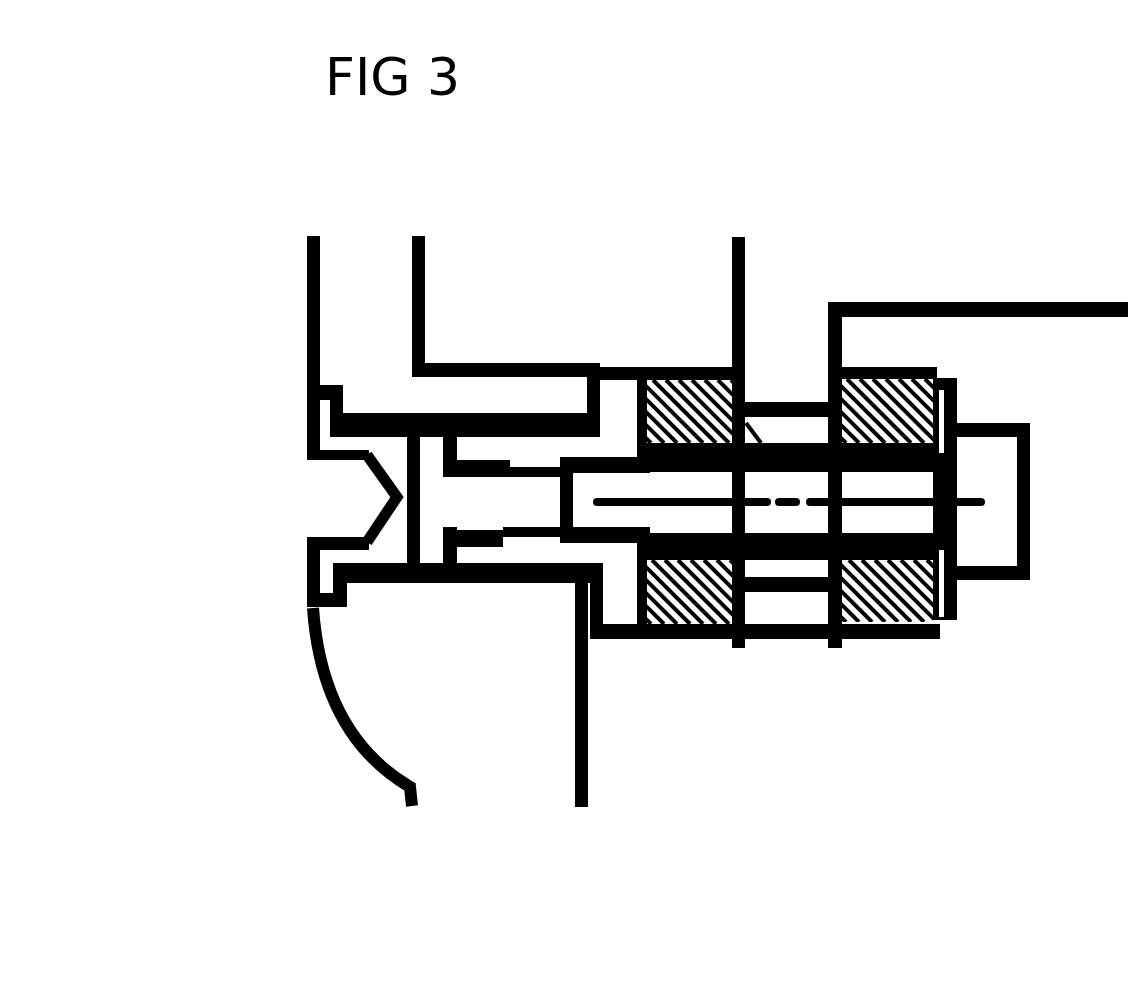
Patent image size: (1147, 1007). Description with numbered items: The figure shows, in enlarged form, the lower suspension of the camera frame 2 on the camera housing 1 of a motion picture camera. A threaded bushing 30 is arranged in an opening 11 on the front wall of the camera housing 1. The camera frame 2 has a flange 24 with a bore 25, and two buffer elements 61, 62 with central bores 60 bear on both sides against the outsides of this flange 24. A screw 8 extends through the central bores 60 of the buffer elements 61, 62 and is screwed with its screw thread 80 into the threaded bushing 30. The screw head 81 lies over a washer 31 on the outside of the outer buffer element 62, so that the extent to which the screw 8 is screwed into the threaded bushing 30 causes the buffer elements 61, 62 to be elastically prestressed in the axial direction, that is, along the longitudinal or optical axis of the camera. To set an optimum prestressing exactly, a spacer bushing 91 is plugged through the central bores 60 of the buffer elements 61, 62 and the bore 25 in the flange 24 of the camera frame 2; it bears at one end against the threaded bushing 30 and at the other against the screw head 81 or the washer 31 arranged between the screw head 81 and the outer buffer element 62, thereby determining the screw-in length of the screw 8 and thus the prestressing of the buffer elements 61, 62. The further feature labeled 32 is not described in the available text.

The camera housing 1 is at (378, 685).
The camera frame 2 is at (965, 280).
The screw 8 is at (987, 607).
The opening 11 is at (343, 507).
The flange 24 is at (797, 363).
The bore 25 is at (793, 565).
The threaded bushing 30 is at (542, 452).
The washer 31 is at (957, 407).
The snap-in clip 32 is at (383, 448).
The central bores 60 is at (720, 636).
The buffer element 61 is at (680, 633).
The buffer element 62 is at (905, 622).
The screw thread 80 is at (617, 545).
The screw head 81 is at (1000, 537).
The spacer bushing 91 is at (677, 363).